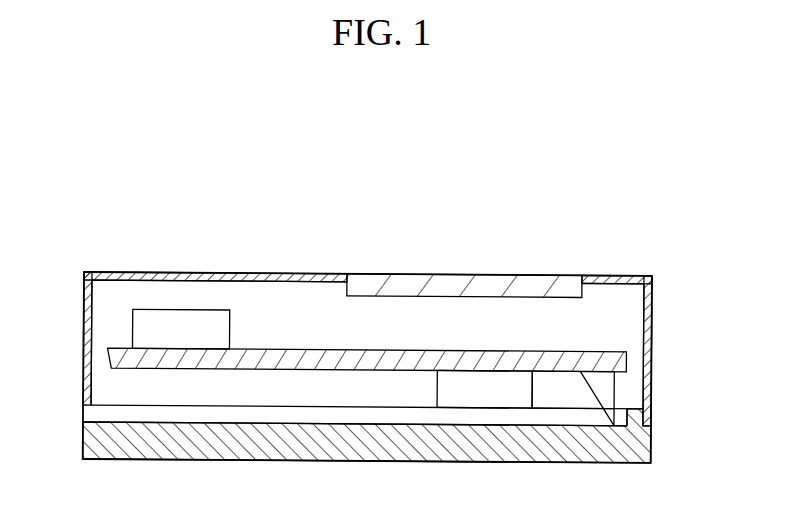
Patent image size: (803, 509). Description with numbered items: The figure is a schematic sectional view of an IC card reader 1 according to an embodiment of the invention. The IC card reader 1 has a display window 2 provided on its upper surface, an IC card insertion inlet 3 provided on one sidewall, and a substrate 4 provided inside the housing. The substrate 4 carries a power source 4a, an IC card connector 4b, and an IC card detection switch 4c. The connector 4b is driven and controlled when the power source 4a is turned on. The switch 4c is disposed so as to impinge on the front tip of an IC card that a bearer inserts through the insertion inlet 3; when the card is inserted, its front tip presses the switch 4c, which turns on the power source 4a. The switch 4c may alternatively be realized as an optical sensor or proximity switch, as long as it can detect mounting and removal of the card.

The IC card reader 1 is at (658, 267).
The display window 2 is at (552, 274).
The IC card insertion inlet 3 is at (100, 412).
The substrate 4 is at (278, 348).
The power source 4a is at (167, 309).
The IC card connector 4b is at (438, 392).
The IC card detection switch 4c is at (615, 392).